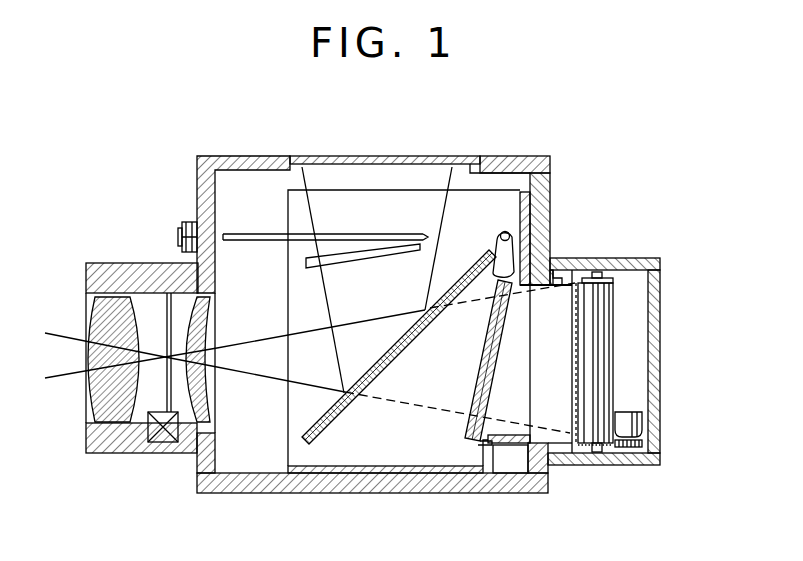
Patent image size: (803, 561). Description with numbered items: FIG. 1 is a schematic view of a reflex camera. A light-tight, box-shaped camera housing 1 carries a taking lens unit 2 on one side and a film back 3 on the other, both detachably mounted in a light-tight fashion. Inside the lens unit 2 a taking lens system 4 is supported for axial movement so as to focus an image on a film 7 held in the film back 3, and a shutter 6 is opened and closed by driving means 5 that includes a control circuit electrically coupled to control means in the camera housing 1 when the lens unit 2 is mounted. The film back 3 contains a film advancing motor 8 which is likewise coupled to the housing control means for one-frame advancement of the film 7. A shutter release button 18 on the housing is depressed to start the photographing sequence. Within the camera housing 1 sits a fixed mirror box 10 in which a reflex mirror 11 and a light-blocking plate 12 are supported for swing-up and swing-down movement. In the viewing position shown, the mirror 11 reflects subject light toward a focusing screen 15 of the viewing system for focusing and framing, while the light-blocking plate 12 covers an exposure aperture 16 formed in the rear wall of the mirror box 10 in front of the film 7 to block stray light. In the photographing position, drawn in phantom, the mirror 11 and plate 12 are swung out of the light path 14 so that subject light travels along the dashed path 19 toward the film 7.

The camera housing 1 is at (543, 180).
The taking lens unit 2 is at (107, 454).
The film back 3 is at (607, 257).
The taking lens system 4 is at (90, 305).
The driving means 5 is at (163, 443).
The shutter 6 is at (207, 399).
The film 7 is at (575, 363).
The film advancing motor 8 is at (644, 423).
The mirror box 10 is at (358, 467).
The reflex mirror 11 is at (317, 420).
The light-blocking plate 12 is at (475, 382).
The light path 14 is at (250, 342).
The focusing screen 15 is at (465, 156).
The exposure aperture 16 is at (490, 393).
The shutter release button 18 is at (180, 235).
The light path to drum 19 is at (402, 405).